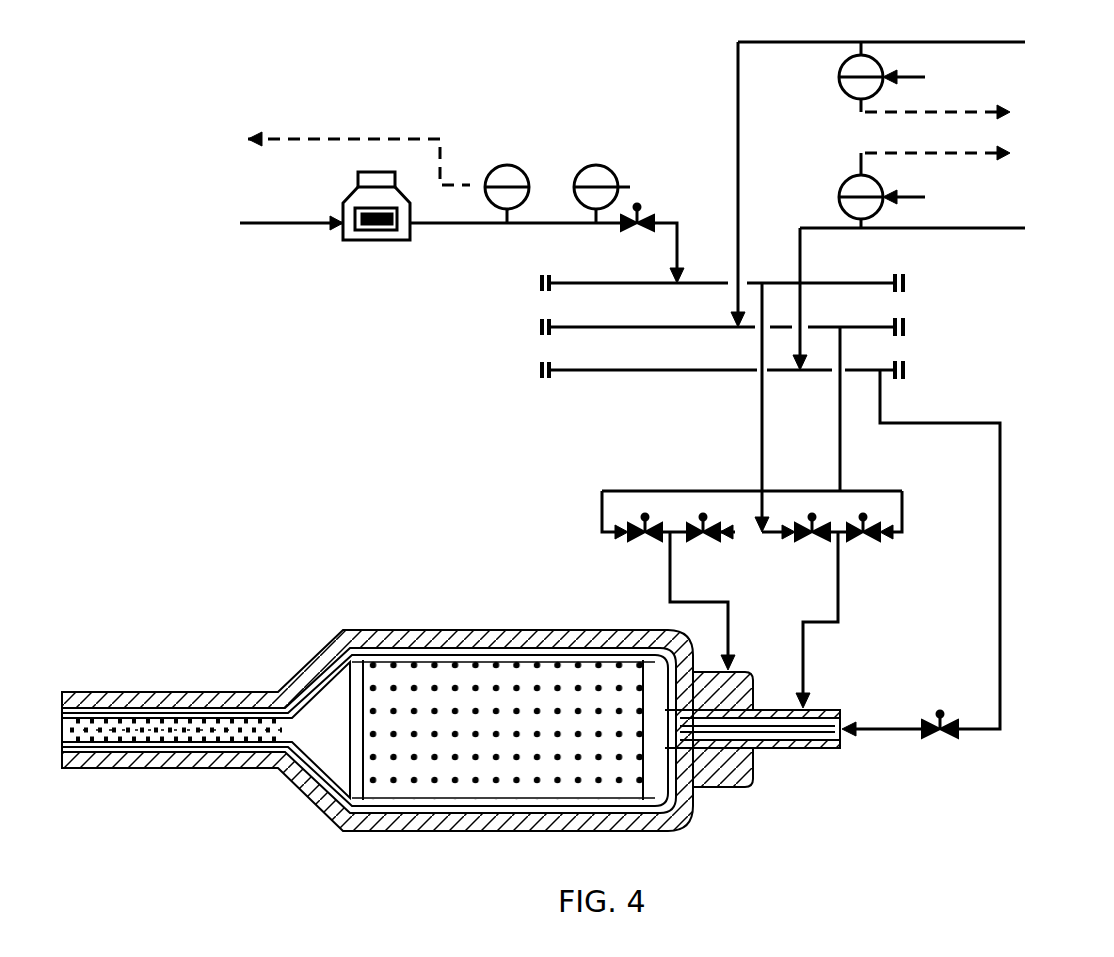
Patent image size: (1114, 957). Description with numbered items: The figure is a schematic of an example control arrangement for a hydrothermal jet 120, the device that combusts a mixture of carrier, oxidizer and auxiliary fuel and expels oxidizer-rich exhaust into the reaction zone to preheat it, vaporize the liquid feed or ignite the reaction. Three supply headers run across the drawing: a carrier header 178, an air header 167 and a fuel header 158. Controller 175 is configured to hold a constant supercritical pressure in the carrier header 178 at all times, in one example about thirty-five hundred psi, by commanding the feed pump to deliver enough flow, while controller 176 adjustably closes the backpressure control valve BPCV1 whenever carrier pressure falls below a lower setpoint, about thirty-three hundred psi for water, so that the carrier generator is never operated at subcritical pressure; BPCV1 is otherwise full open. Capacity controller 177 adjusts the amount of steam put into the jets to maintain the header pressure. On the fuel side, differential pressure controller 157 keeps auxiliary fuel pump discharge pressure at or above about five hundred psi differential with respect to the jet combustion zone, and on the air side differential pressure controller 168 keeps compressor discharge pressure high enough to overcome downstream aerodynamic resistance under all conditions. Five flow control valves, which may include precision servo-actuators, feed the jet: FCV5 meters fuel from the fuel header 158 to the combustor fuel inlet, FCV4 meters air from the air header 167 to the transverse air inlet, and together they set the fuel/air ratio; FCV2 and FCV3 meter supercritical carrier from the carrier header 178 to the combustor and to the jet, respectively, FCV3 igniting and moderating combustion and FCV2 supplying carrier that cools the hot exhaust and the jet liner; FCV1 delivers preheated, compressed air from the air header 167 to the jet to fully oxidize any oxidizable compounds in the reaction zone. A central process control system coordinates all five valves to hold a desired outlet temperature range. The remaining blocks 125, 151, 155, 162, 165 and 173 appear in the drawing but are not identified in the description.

The hydrothermal jet 120 is at (275, 608).
The controller 125 is at (960, 135).
The fuel source 151 is at (1068, 227).
The fuel sensor output 155 is at (1054, 164).
The differential pressure controller 157 is at (840, 188).
The fuel header 158 is at (522, 372).
The oxidant source 162 is at (1068, 37).
The oxidant sensor output 165 is at (1054, 102).
The air header 167 is at (525, 326).
The differential pressure controller 168 is at (840, 86).
The exhaust gas source 173 is at (196, 223).
The controller 175 is at (507, 165).
The controller 176 is at (596, 165).
The capacity controller 177 is at (196, 140).
The carrier header 178 is at (522, 285).
The backpressure control valve BPCV1 is at (650, 210).
The flow control valve FCV1 is at (632, 542).
The flow control valve FCV2 is at (690, 542).
The flow control valve FCV3 is at (822, 542).
The flow control valve FCV4 is at (875, 542).
The flow control valve FCV5 is at (952, 737).